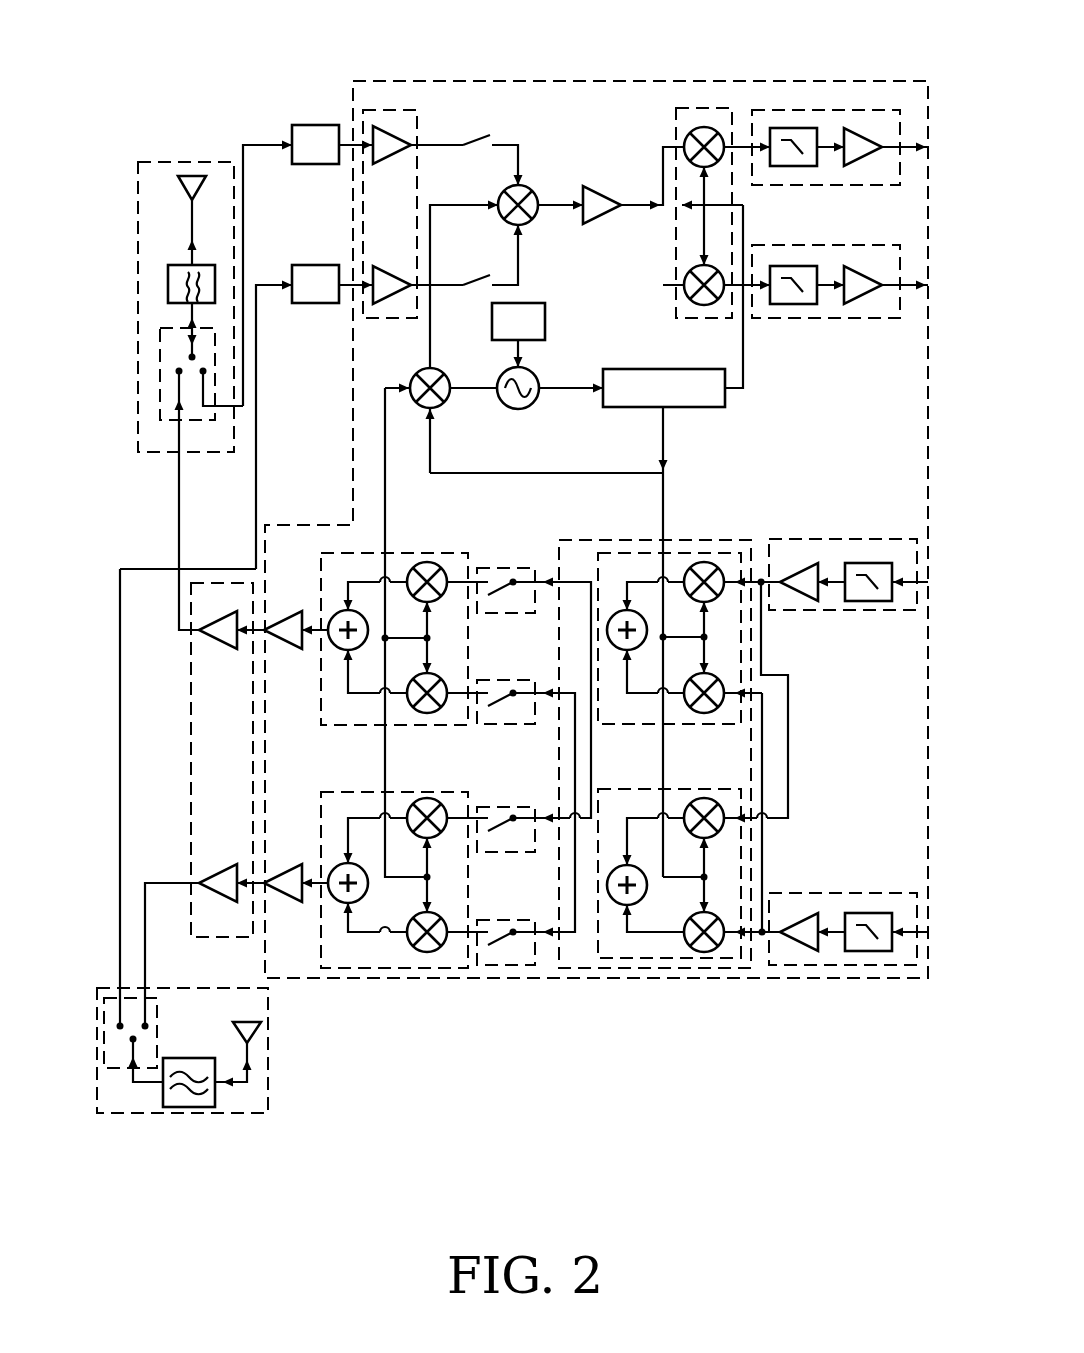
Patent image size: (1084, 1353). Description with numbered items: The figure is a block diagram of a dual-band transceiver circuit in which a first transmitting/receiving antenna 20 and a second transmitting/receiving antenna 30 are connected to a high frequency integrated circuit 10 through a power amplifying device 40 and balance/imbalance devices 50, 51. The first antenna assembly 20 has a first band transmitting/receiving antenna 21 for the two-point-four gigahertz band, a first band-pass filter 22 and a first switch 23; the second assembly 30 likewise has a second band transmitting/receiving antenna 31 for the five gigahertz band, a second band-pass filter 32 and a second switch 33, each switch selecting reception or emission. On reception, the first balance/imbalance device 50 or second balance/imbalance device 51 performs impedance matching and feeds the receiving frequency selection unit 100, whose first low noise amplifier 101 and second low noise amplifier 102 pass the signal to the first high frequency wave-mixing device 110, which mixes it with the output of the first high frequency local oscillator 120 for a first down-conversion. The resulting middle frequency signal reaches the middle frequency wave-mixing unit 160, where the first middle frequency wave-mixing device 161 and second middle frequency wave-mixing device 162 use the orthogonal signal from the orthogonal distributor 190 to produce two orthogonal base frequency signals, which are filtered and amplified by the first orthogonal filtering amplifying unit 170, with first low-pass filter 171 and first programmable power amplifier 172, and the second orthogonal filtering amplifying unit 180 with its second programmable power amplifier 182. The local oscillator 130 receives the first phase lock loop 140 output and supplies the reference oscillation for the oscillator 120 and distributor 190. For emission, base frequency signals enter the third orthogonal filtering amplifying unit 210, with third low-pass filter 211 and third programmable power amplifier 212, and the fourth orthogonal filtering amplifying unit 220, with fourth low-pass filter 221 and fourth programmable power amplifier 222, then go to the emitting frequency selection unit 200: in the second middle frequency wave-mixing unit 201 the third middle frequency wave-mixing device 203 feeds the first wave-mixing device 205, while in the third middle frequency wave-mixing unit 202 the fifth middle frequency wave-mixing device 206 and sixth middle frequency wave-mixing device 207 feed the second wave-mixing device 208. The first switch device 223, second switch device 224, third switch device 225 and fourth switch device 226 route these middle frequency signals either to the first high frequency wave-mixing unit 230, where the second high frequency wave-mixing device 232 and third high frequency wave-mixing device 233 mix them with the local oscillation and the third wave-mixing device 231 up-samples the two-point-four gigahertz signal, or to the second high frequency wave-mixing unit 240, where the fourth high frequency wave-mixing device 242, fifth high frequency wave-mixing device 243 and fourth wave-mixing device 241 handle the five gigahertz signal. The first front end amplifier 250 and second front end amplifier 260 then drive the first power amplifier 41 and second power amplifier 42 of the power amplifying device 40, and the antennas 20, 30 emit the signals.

The high frequency integrated circuit 10 is at (558, 108).
The first transmitting/receiving antenna 20 is at (220, 180).
The first band transmitting/receiving antenna 21 is at (178, 180).
The first band-pass filter 22 is at (168, 283).
The first switch 23 is at (168, 380).
The second transmitting/receiving antenna 30 is at (252, 1095).
The second band transmitting/receiving antenna 31 is at (258, 1032).
The second band-pass filter 32 is at (185, 1097).
The second switch 33 is at (113, 1060).
The power amplifying device 40 is at (215, 763).
The first power amplifier 41 is at (222, 650).
The second power amplifier 42 is at (222, 862).
The first balance/imbalance device 50 is at (312, 290).
The second balance/imbalance device 51 is at (318, 135).
The receiving frequency selection unit 100 is at (412, 112).
The first low noise amplifier 101 is at (392, 130).
The second low noise amplifier 102 is at (388, 300).
The first high frequency wave-mixing device 110 is at (525, 192).
The first high frequency local oscillator 120 is at (432, 408).
The local oscillator 130 is at (520, 408).
The first phase lock loop 140 is at (535, 303).
The middle frequency wave-mixing unit 160 is at (705, 118).
The first middle frequency wave-mixing device 161 is at (690, 135).
The second middle frequency wave-mixing device 162 is at (703, 306).
The first orthogonal filtering amplifying unit 170 is at (831, 123).
The first low-pass filter 171 is at (787, 164).
The first programmable power amplifier 172 is at (860, 164).
The second orthogonal filtering amplifying unit 180 is at (787, 305).
The second programmable power amplifier 182 is at (860, 305).
The orthogonal distributor 190 is at (628, 385).
The emitting frequency selection unit 200 is at (648, 967).
The second middle frequency wave-mixing unit 201 is at (728, 643).
The third middle frequency wave-mixing unit 202 is at (631, 800).
The third middle frequency wave-mixing device 203 is at (706, 560).
The first wave-mixing device 205 is at (622, 610).
The fifth middle frequency wave-mixing device 206 is at (718, 832).
The sixth middle frequency wave-mixing device 207 is at (702, 950).
The second wave-mixing device 208 is at (619, 905).
The third orthogonal filtering amplifying unit 210 is at (831, 540).
The third low-pass filter 211 is at (868, 565).
The third programmable power amplifier 212 is at (797, 567).
The fourth orthogonal filtering amplifying unit 220 is at (836, 957).
The fourth low-pass filter 221 is at (870, 950).
The fourth programmable power amplifier 222 is at (800, 945).
The first switch device 223 is at (495, 568).
The second switch device 224 is at (502, 718).
The third switch device 225 is at (500, 852).
The fourth switch device 226 is at (502, 965).
The first high frequency wave-mixing unit 230 is at (358, 713).
The third wave-mixing device 231 is at (335, 612).
The second high frequency wave-mixing device 232 is at (432, 560).
The third high frequency wave-mixing device 233 is at (425, 715).
The second high frequency wave-mixing unit 240 is at (370, 968).
The fourth wave-mixing device 241 is at (335, 903).
The fourth high frequency wave-mixing device 242 is at (430, 800).
The fifth high frequency wave-mixing device 243 is at (425, 952).
The first front end amplifier 250 is at (290, 650).
The second front end amplifier 260 is at (290, 862).